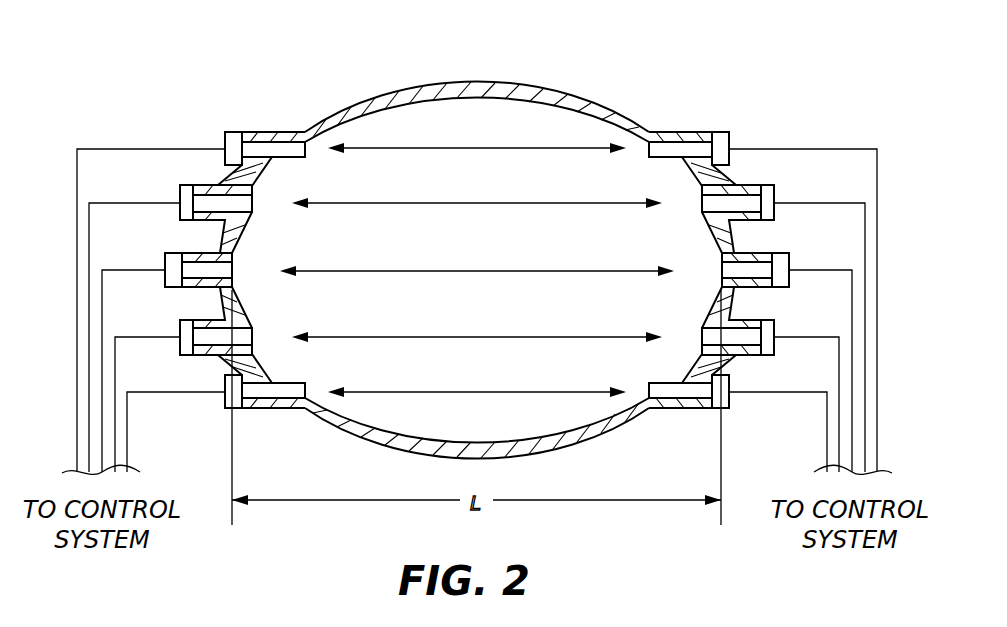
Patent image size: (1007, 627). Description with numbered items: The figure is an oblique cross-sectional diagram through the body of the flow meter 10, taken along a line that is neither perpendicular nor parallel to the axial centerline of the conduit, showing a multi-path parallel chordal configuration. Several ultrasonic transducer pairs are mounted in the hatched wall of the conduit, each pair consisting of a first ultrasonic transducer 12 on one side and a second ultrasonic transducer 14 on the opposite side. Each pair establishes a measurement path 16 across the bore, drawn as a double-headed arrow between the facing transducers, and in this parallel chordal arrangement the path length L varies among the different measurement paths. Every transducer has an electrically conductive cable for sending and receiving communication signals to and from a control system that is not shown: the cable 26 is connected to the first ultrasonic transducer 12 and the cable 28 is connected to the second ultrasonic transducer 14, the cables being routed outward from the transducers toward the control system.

The flow meter 10 is at (296, 86).
The first ultrasonic transducer 12 is at (785, 253).
The second ultrasonic transducer 14 is at (173, 253).
The measurement path 16 is at (545, 271).
The cable 26 is at (852, 360).
The cable 28 is at (102, 360).